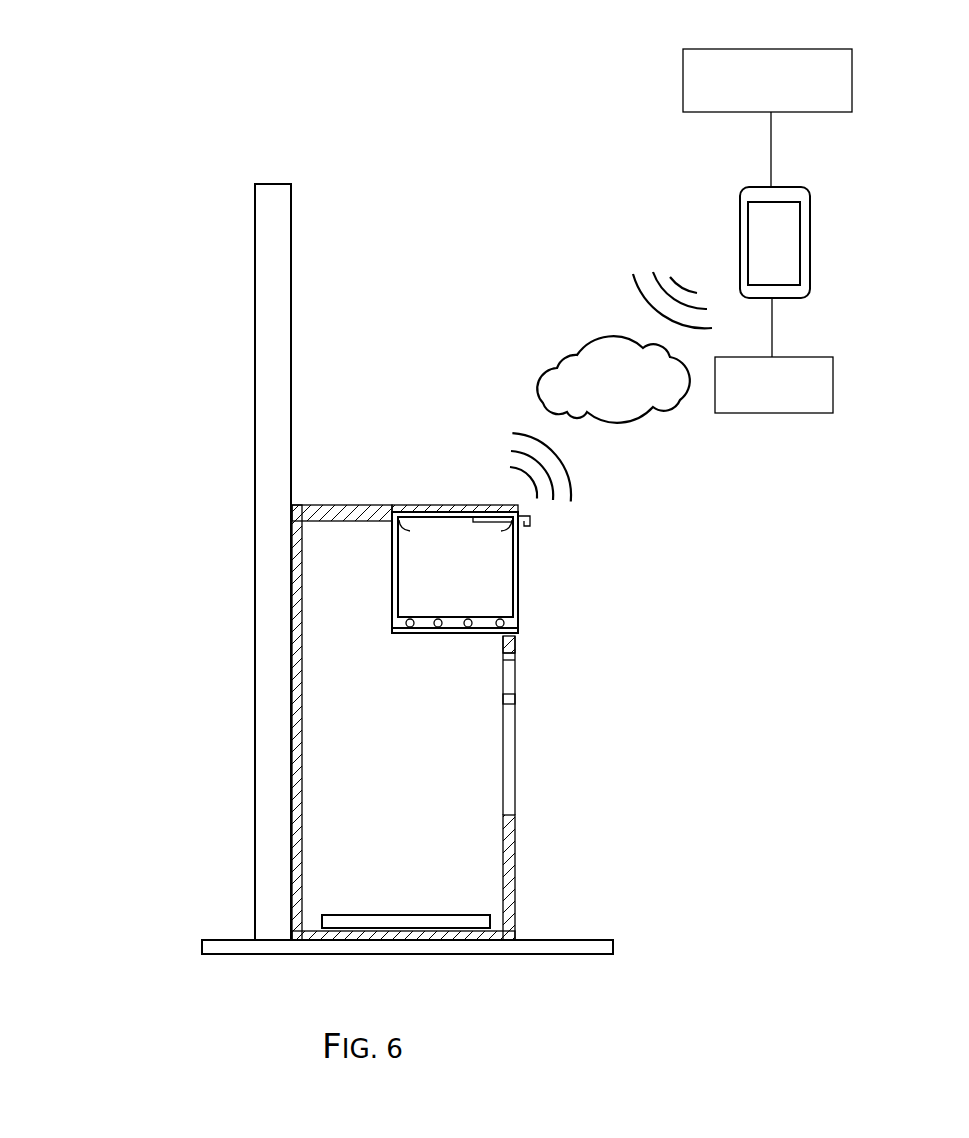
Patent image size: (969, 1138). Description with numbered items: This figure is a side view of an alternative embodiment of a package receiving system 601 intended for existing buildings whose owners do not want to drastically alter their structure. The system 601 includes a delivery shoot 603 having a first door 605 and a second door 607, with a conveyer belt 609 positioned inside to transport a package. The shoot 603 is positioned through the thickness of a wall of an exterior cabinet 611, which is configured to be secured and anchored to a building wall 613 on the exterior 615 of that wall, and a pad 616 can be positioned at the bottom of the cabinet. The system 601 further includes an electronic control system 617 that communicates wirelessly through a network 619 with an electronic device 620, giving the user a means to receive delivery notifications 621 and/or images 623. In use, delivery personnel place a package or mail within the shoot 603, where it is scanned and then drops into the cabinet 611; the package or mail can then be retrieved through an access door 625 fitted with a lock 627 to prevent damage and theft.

The package receiving system 601 is at (139, 56).
The delivery shoot 603 is at (448, 640).
The first door 605 is at (518, 585).
The second door 607 is at (392, 588).
The conveyer belt 609 is at (430, 614).
The exterior cabinet 611 is at (516, 886).
The building wall 613 is at (255, 332).
The exterior 615 is at (394, 220).
The pad 616 is at (392, 913).
The electronic control system 617 is at (521, 535).
The network 619 is at (577, 352).
The electronic device 620 is at (740, 212).
The delivery notifications 621 is at (683, 72).
The images 623 is at (767, 413).
The access door 625 is at (516, 742).
The lock 627 is at (516, 699).